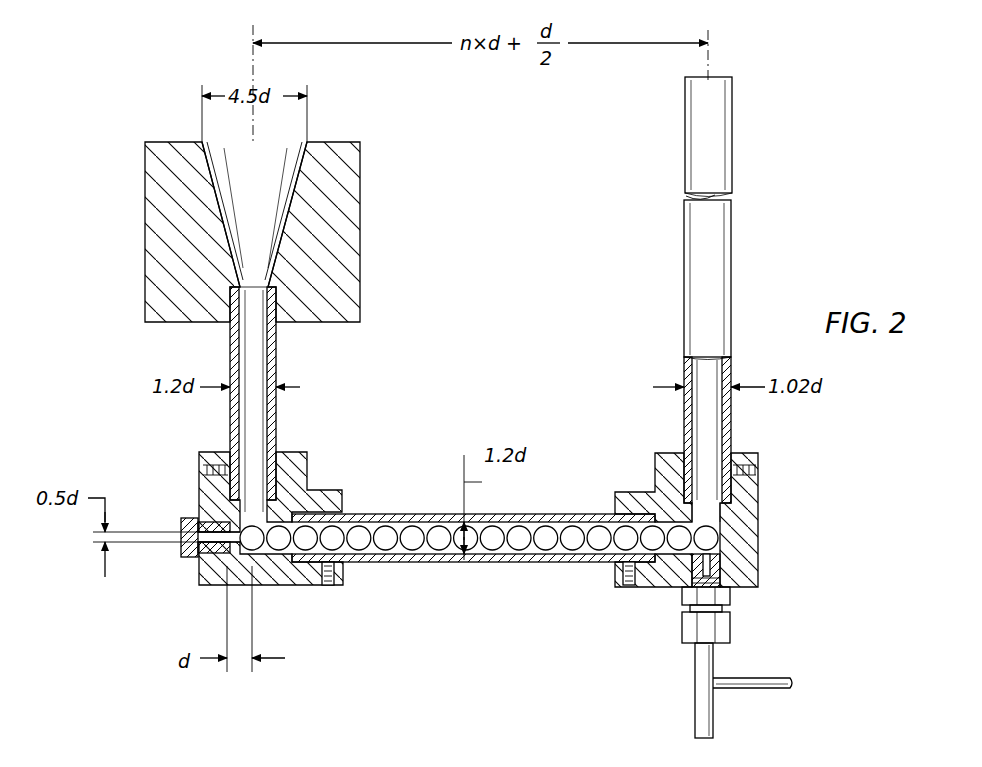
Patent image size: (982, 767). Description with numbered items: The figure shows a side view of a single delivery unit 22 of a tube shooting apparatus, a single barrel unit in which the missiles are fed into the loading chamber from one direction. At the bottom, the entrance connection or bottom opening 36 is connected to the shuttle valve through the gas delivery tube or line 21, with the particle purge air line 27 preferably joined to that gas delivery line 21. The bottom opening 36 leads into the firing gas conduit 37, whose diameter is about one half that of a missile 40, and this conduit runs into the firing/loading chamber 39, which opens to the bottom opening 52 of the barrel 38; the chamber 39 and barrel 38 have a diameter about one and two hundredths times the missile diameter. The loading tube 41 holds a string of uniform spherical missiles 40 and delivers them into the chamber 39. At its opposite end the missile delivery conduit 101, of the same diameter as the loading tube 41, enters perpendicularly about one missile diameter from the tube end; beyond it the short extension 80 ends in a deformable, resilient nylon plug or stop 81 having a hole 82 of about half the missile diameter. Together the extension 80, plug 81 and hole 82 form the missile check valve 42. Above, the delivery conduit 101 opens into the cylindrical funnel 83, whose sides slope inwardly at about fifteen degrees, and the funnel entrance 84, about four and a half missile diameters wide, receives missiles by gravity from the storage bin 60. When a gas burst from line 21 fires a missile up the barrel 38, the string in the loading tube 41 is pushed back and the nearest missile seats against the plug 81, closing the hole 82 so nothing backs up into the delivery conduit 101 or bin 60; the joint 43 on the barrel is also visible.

The missile storage chamber or bin 60 is at (156, 126).
The funnel entrance 84 is at (287, 142).
The cylindrical funnel 83 is at (290, 210).
The single delivery unit 22 is at (536, 215).
The tube joint 43 is at (718, 200).
The barrel 38 is at (728, 280).
The missile delivery conduit 101 is at (278, 428).
The hole 82 is at (190, 518).
The plug or stop 81 is at (204, 556).
The missile check valve 42 is at (186, 607).
The extension 80 is at (254, 548).
The loading tube 41 is at (395, 513).
The missiles 40 is at (518, 548).
The bottom opening of the barrel 52 is at (657, 487).
The firing/loading chamber 39 is at (717, 523).
The firing gas conduit 37 is at (717, 562).
The entrance connection or bottom opening 36 is at (712, 648).
The gas delivery tube or line 21 is at (693, 700).
The particle purge air line 27 is at (775, 692).